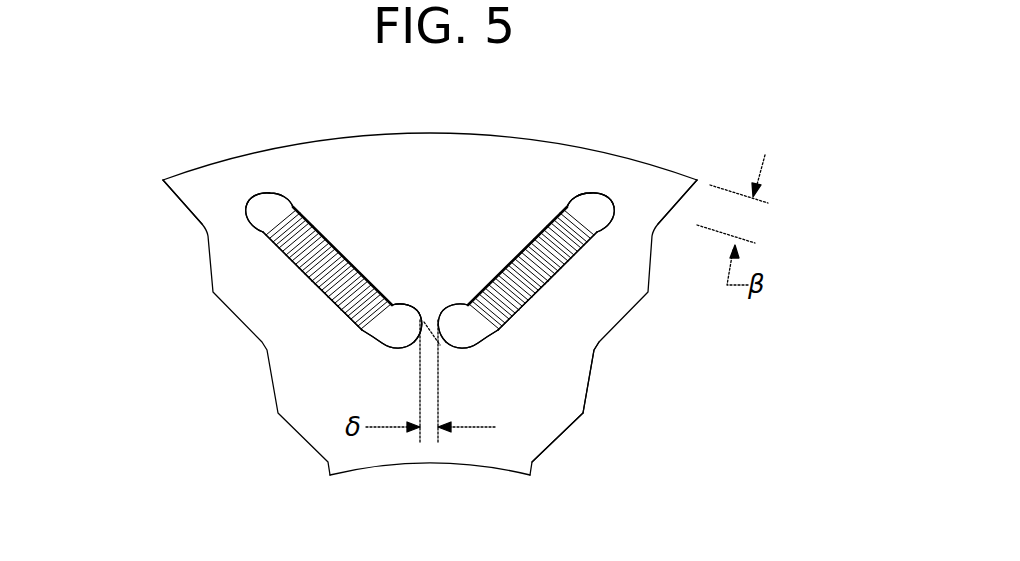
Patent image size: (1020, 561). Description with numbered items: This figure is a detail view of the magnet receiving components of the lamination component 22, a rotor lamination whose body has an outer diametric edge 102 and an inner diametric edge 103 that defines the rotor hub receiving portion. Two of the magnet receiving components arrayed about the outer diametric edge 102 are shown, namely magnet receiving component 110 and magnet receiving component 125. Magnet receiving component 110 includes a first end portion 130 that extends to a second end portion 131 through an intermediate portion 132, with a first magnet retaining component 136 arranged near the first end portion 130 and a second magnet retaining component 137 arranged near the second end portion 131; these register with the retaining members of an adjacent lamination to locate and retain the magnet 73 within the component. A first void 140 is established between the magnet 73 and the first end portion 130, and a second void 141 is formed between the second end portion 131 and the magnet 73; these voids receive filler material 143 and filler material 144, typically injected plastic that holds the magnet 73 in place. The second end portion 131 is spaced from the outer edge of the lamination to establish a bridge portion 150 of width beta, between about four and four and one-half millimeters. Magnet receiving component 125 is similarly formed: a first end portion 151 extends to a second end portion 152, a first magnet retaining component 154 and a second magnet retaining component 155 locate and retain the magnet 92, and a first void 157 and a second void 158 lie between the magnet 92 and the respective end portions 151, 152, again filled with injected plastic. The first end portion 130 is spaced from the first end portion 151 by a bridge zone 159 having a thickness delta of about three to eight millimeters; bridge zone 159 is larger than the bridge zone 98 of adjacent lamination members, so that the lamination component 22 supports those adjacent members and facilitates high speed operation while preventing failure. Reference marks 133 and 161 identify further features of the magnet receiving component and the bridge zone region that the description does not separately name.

The lamination component 22 is at (236, 64).
The magnet 73 is at (520, 260).
The magnet 92 is at (293, 254).
The bridge zone 98 is at (452, 322).
The outer diametric edge 102 is at (316, 135).
The inner diametric edge 103 is at (435, 466).
The magnet receiving component 110 is at (580, 309).
The magnet receiving component 125 is at (290, 292).
The first end portion 130 is at (405, 340).
The second end portion 131 is at (620, 218).
The intermediate portion 132 is at (550, 224).
The slot side wall 133 is at (530, 312).
The first magnet retaining component 136 is at (467, 306).
The second magnet retaining component 137 is at (602, 236).
The first void 140 is at (470, 352).
The second void 141 is at (588, 206).
The filler material 143 is at (452, 322).
The filler material 144 is at (605, 198).
The bridge portion 150 is at (617, 176).
The first end portion 151 is at (229, 178).
The second end portion 152 is at (250, 197).
The first magnet retaining component 154 is at (397, 306).
The second magnet retaining component 155 is at (263, 232).
The first void 157 is at (355, 334).
The second void 158 is at (266, 185).
The bridge zone 159 is at (470, 400).
The tooth tip 161 is at (413, 348).